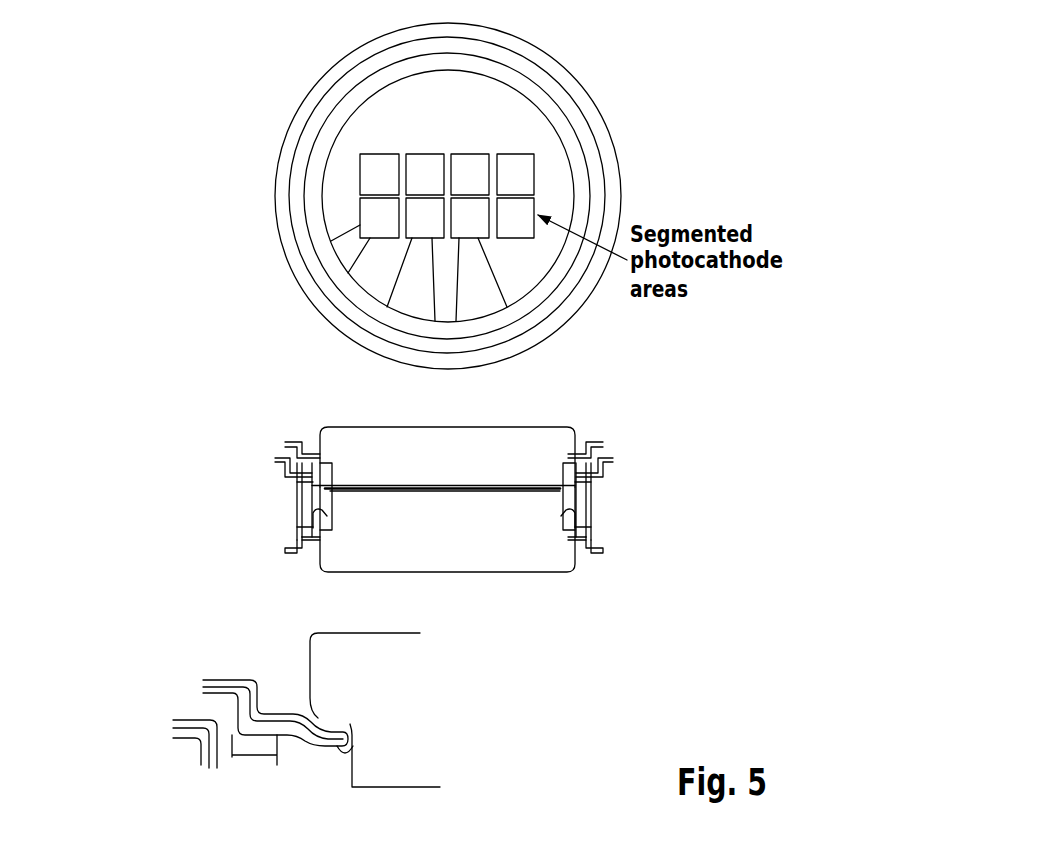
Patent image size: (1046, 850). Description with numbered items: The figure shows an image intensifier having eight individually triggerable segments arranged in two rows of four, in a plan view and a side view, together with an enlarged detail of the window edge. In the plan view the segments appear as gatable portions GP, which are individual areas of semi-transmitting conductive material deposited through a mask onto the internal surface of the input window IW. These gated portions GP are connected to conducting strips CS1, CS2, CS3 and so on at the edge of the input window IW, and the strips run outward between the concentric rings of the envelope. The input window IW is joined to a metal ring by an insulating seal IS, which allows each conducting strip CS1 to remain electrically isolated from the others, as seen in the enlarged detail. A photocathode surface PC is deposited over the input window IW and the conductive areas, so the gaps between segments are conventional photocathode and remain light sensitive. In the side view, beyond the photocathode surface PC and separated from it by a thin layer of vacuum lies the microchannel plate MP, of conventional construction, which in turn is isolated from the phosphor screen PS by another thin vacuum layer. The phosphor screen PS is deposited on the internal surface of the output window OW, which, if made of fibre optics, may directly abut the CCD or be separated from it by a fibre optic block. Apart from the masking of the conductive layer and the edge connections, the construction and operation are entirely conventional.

The gatable portions GP is at (538, 150).
The conducting strip CS1 is at (338, 268).
The conducting strip CS2 is at (403, 318).
The conducting strip CS3 is at (485, 318).
The input window IW is at (578, 425).
The photocathode surface PC is at (535, 482).
The microchannel plate MP is at (558, 490).
The output window OW is at (578, 567).
The phosphor screen PS is at (456, 491).
The insulating seal IS is at (338, 760).